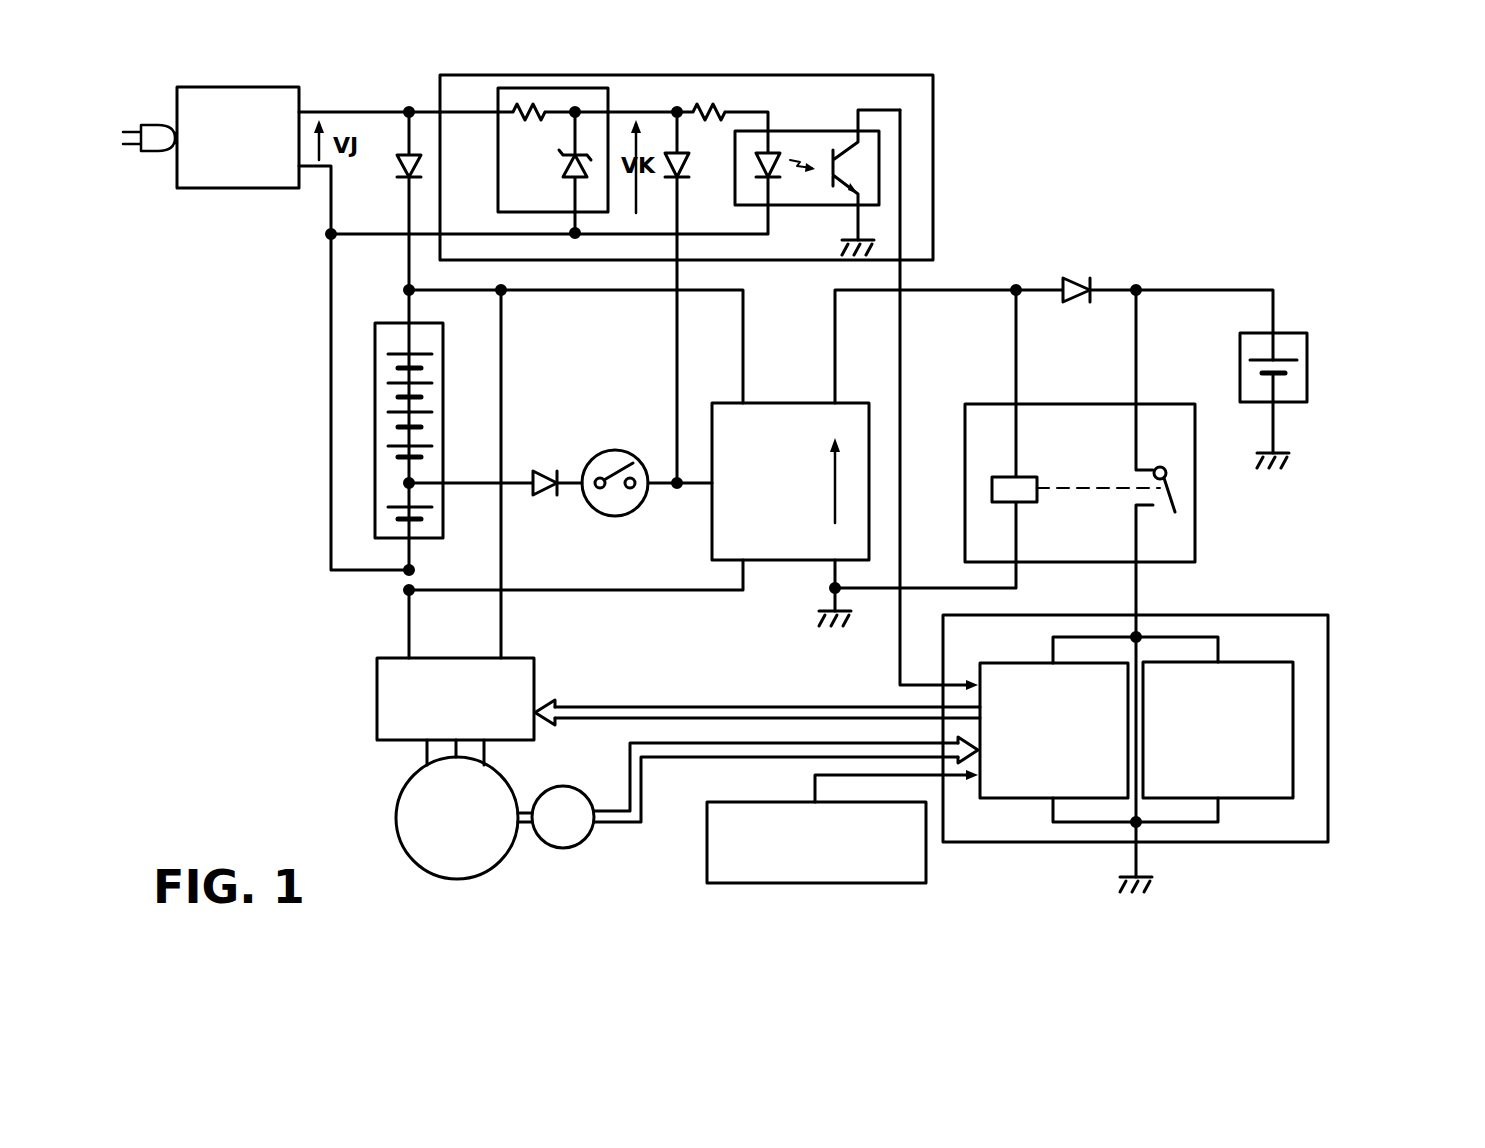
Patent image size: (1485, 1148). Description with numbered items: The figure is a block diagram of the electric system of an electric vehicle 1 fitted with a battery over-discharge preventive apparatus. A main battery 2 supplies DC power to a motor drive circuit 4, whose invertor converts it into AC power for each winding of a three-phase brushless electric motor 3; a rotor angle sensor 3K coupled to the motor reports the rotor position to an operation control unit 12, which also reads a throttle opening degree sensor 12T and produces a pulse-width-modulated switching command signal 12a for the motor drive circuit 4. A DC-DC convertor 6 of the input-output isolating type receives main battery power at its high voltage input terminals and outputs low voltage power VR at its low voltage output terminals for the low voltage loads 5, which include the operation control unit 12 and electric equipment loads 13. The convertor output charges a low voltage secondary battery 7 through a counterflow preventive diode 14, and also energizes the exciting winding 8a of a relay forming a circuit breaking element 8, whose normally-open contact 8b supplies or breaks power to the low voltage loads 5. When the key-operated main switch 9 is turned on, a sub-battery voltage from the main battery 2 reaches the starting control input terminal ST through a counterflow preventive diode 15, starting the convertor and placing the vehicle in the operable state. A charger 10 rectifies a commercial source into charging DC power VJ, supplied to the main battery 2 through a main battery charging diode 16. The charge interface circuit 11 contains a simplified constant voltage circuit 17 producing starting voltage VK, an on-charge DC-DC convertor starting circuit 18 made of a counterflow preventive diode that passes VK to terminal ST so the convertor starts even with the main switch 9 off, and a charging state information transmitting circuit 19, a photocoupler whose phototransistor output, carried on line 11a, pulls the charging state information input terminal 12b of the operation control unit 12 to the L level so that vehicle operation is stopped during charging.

The electric vehicle 1 is at (1272, 201).
The main battery 2 is at (375, 423).
The electric motor 3 is at (393, 838).
The rotor angle sensor 3K is at (574, 847).
The motor drive circuit 4 is at (377, 685).
The low voltage loads 5 is at (1214, 753).
The DC-DC convertor 6 is at (805, 561).
The low voltage secondary battery 7 is at (1285, 333).
The circuit breaking element 8 is at (1169, 556).
The exciting winding 8a is at (1027, 477).
The normally-open contact 8b is at (1178, 482).
The main switch 9 is at (620, 450).
The charger 10 is at (240, 189).
The charge interface circuit 11 is at (933, 105).
The charge detection signal line 11a is at (900, 277).
The operation control unit 12 is at (1016, 798).
The switching command signal 12a is at (575, 707).
The charging state information input terminal 12b is at (1015, 663).
The throttle opening degree sensor 12T is at (745, 802).
The electric equipment loads 13 is at (1257, 798).
The counterflow preventive diode 14 is at (1076, 300).
The counterflow preventive diode 15 is at (541, 491).
The main battery charging diode 16 is at (398, 166).
The simplified constant voltage circuit 17 is at (498, 163).
The on-charge DC-DC convertor starting circuit 18 is at (691, 166).
The charging state information transmitting circuit 19 is at (820, 131).